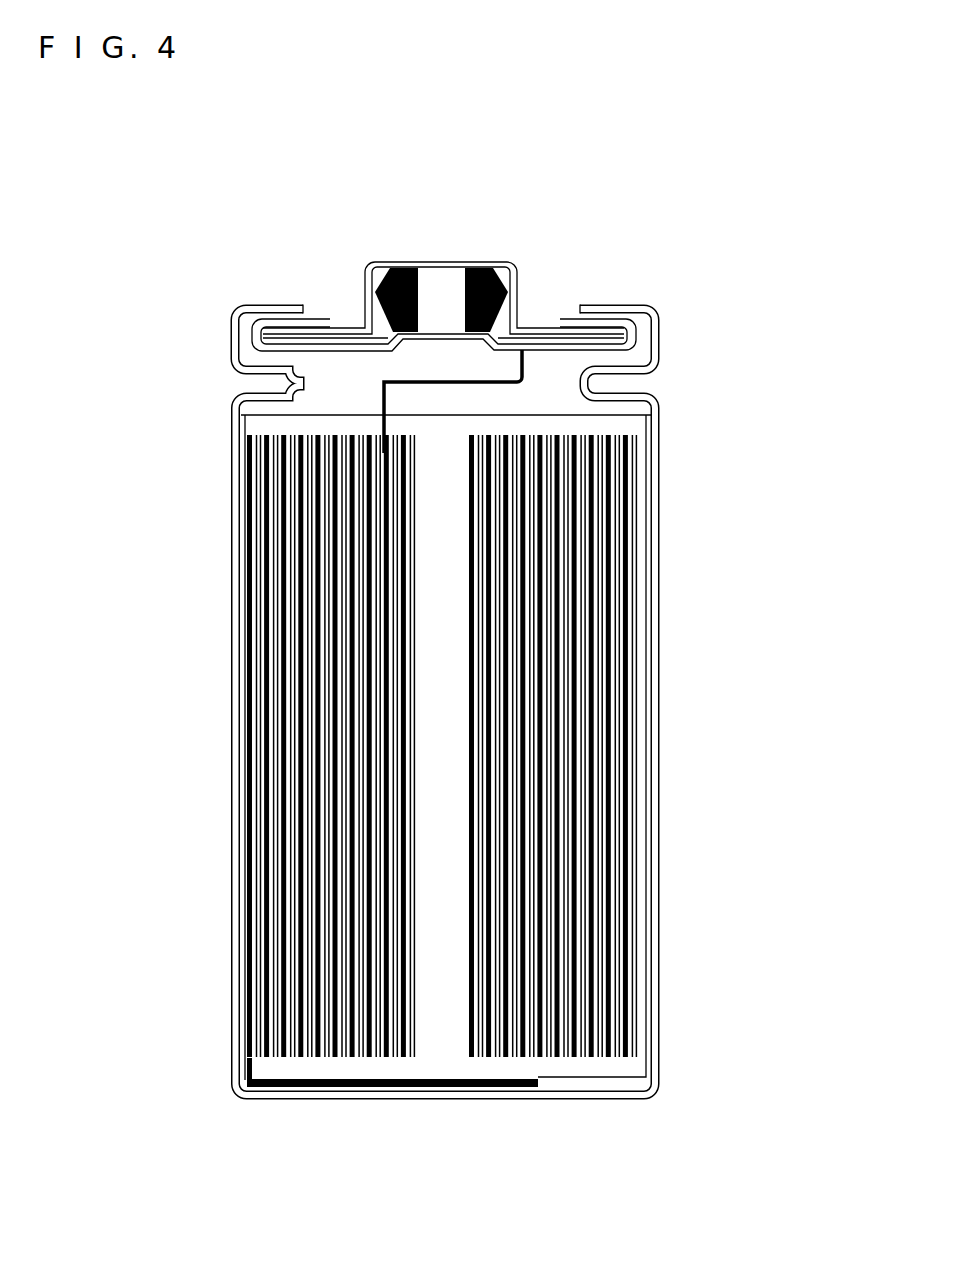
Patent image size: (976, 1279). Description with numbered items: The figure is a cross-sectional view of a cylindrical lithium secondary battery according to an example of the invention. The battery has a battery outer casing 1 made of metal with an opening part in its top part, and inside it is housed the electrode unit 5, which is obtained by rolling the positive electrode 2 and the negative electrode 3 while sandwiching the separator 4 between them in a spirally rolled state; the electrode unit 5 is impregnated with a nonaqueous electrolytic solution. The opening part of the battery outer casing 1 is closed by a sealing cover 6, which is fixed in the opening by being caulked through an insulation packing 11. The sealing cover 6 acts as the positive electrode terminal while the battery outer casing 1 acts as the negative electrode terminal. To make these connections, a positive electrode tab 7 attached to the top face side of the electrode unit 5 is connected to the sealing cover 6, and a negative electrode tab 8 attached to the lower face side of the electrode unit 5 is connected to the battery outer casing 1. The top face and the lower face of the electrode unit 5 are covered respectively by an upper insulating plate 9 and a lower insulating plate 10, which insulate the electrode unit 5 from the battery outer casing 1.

The battery outer casing 1 is at (662, 485).
The positive electrode 2 is at (645, 820).
The negative electrode 3 is at (650, 665).
The separator 4 is at (640, 742).
The electrode unit 5 is at (302, 718).
The sealing cover 6 is at (520, 277).
The positive electrode tab 7 is at (378, 406).
The negative electrode tab 8 is at (415, 1088).
The upper insulating plate 9 is at (267, 428).
The lower insulating plate 10 is at (272, 1071).
The insulation packing 11 is at (637, 353).